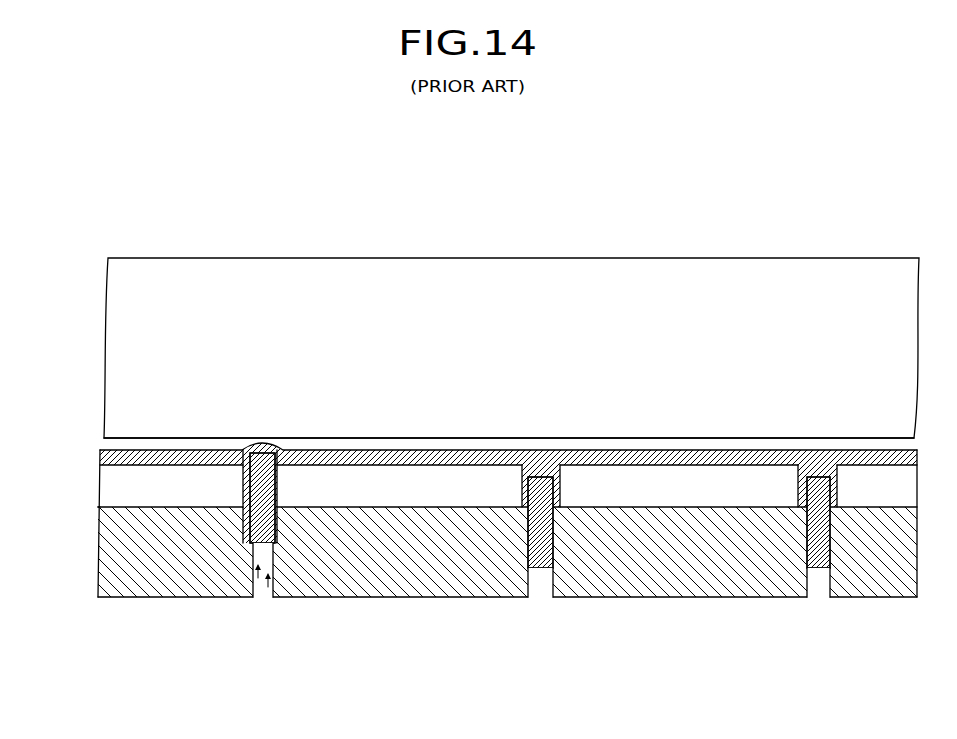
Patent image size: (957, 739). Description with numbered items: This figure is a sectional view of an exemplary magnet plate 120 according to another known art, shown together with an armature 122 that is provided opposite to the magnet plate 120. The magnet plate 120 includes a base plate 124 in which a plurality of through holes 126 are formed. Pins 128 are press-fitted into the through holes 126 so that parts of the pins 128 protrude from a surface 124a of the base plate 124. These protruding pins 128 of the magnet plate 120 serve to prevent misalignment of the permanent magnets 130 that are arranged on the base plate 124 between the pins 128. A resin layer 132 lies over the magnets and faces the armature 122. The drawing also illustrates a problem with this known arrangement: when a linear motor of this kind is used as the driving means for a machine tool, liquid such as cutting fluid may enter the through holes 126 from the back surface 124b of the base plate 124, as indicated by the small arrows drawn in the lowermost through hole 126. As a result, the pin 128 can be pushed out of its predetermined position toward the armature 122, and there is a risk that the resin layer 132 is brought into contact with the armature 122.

The magnet plate 120 is at (291, 640).
The armature 122 is at (703, 288).
The base plate 124 is at (102, 560).
The surface of the base plate 124a is at (203, 494).
The back surface of the base plate 124b is at (148, 597).
The through hole 126 is at (556, 582).
The pin 128 is at (281, 524).
The permanent magnet 130 is at (405, 497).
The resin layer 132 is at (101, 452).